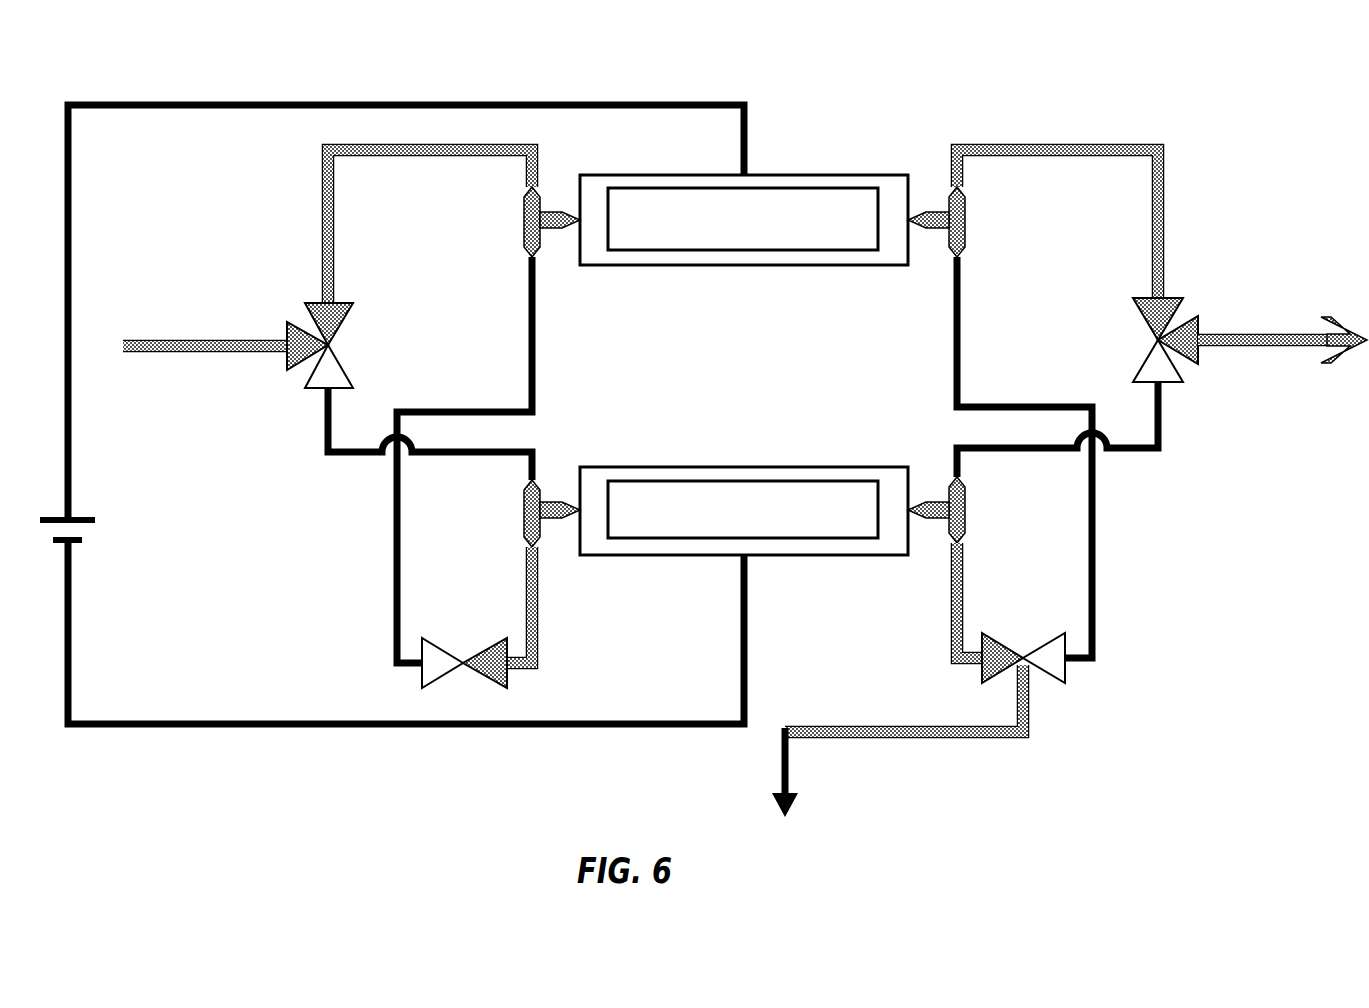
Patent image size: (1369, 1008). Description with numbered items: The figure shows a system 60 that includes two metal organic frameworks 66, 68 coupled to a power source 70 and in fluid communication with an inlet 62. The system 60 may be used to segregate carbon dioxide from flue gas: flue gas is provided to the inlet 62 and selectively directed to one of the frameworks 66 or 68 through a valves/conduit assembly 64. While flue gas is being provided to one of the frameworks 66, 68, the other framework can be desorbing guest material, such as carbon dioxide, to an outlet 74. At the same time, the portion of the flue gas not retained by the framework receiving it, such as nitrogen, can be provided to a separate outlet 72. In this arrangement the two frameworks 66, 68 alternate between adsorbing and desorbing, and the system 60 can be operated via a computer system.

The system 60 is at (1140, 96).
The inlet 62 is at (208, 342).
The valves/conduit assembly 64 is at (335, 347).
The framework 66 is at (817, 188).
The framework 68 is at (688, 480).
The power source 70 is at (80, 517).
The outlet 72 is at (1282, 335).
The outlet 74 is at (787, 763).